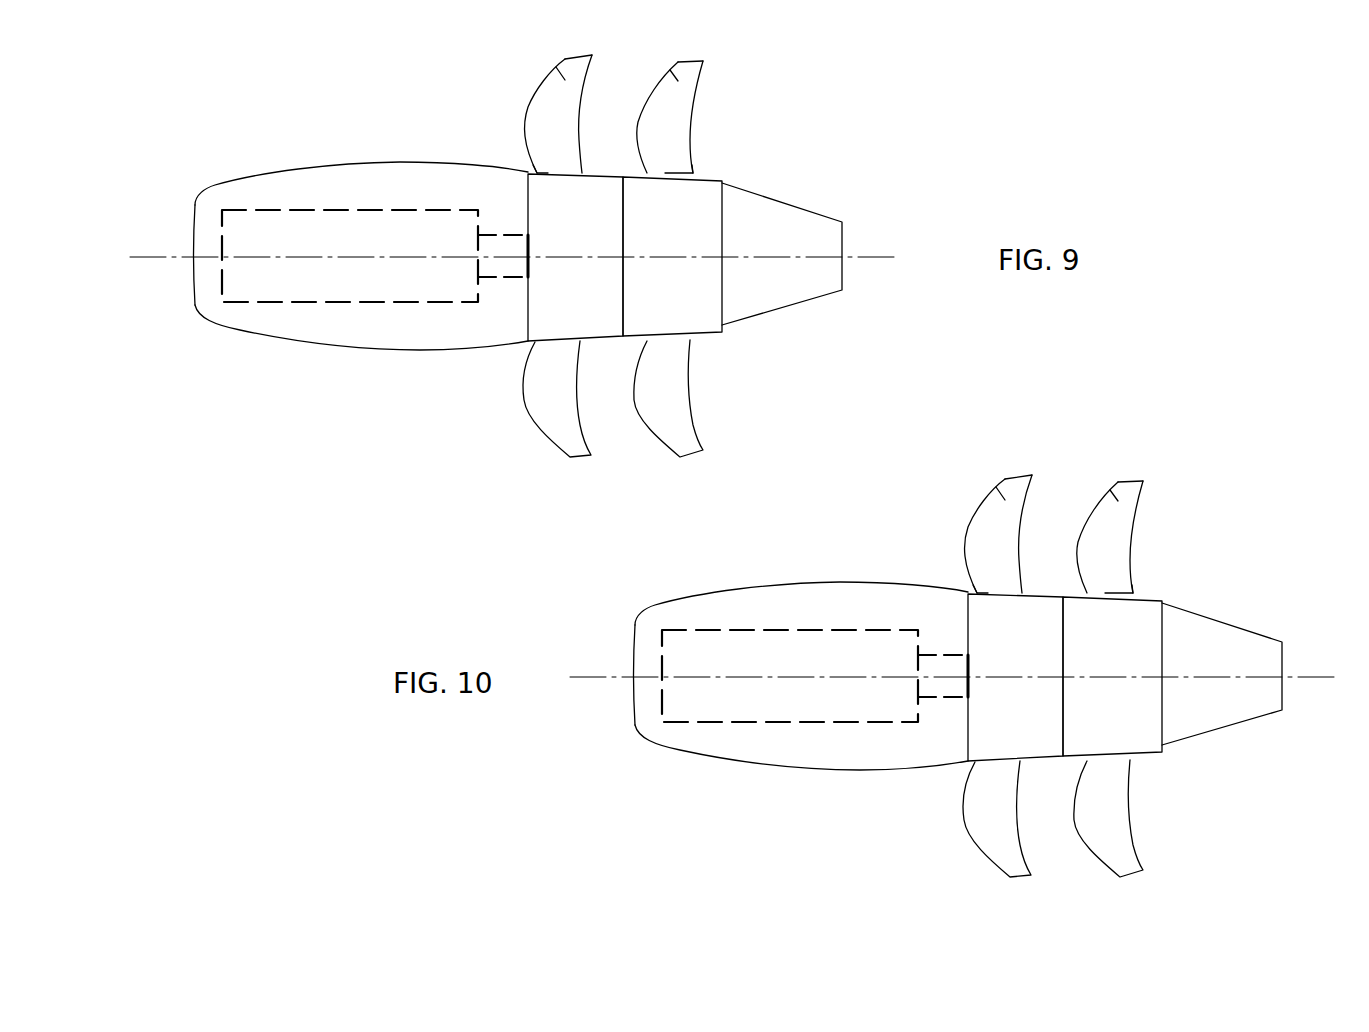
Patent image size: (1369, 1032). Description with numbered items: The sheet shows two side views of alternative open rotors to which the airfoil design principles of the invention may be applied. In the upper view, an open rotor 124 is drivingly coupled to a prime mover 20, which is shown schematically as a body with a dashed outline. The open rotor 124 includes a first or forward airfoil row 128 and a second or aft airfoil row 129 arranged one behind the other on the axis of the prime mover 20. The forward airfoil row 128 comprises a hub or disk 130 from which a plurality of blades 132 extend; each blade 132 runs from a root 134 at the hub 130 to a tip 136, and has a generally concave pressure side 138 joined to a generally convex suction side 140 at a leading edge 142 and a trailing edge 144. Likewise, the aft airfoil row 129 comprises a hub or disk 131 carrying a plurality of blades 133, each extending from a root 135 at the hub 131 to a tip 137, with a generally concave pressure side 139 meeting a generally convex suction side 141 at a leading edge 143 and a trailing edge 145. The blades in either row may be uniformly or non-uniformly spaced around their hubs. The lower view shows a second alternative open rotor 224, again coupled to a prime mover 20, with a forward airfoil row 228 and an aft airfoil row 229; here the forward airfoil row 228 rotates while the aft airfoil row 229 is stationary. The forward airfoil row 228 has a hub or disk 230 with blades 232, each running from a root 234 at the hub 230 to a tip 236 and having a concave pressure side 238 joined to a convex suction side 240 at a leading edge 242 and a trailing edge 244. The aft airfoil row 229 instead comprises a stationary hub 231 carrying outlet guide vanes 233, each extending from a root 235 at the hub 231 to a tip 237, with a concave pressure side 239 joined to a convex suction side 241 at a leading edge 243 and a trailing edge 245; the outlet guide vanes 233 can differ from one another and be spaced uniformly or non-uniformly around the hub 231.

In FIG. 9, the prime mover 20 is at (265, 310).
In FIG. 10, the prime mover 20 is at (801, 691).
In FIG. 9, the open rotor 124 is at (654, 268).
In FIG. 9, the forward airfoil row 128 is at (557, 268).
In FIG. 9, the aft airfoil row 129 is at (684, 268).
In FIG. 9, the hub 130 is at (555, 245).
In FIG. 9, the hub 131 is at (658, 245).
In FIG. 9, the blade 132 is at (557, 94).
In FIG. 9, the blade 133 is at (684, 95).
In FIG. 9, the root 134 is at (548, 172).
In FIG. 9, the root 135 is at (665, 175).
In FIG. 9, the tip 136 is at (578, 54).
In FIG. 9, the tip 137 is at (702, 61).
In FIG. 9, the pressure side 138 is at (545, 94).
In FIG. 9, the pressure side 139 is at (684, 112).
In FIG. 9, the suction side 140 is at (554, 68).
In FIG. 9, the suction side 141 is at (668, 71).
In FIG. 9, the leading edge 142 is at (524, 120).
In FIG. 9, the leading edge 143 is at (637, 153).
In FIG. 9, the trailing edge 144 is at (580, 125).
In FIG. 9, the trailing edge 145 is at (692, 123).
In FIG. 10, the open rotor 224 is at (1094, 688).
In FIG. 10, the forward airfoil row 228 is at (997, 688).
In FIG. 10, the aft airfoil row 229 is at (1124, 688).
In FIG. 10, the hub 230 is at (1015, 677).
In FIG. 10, the stationary hub 231 is at (1112, 676).
In FIG. 10, the blade 232 is at (997, 514).
In FIG. 10, the outlet guide vane 233 is at (1124, 515).
In FIG. 10, the root 234 is at (950, 572).
In FIG. 10, the root 235 is at (1145, 580).
In FIG. 10, the tip 236 is at (986, 457).
In FIG. 10, the tip 237 is at (1170, 482).
In FIG. 10, the pressure side 238 is at (985, 514).
In FIG. 10, the pressure side 239 is at (1124, 532).
In FIG. 10, the suction side 240 is at (968, 486).
In FIG. 10, the suction side 241 is at (1082, 488).
In FIG. 10, the leading edge 242 is at (955, 536).
In FIG. 10, the leading edge 243 is at (1072, 537).
In FIG. 10, the trailing edge 244 is at (1041, 534).
In FIG. 10, the trailing edge 245 is at (1153, 537).